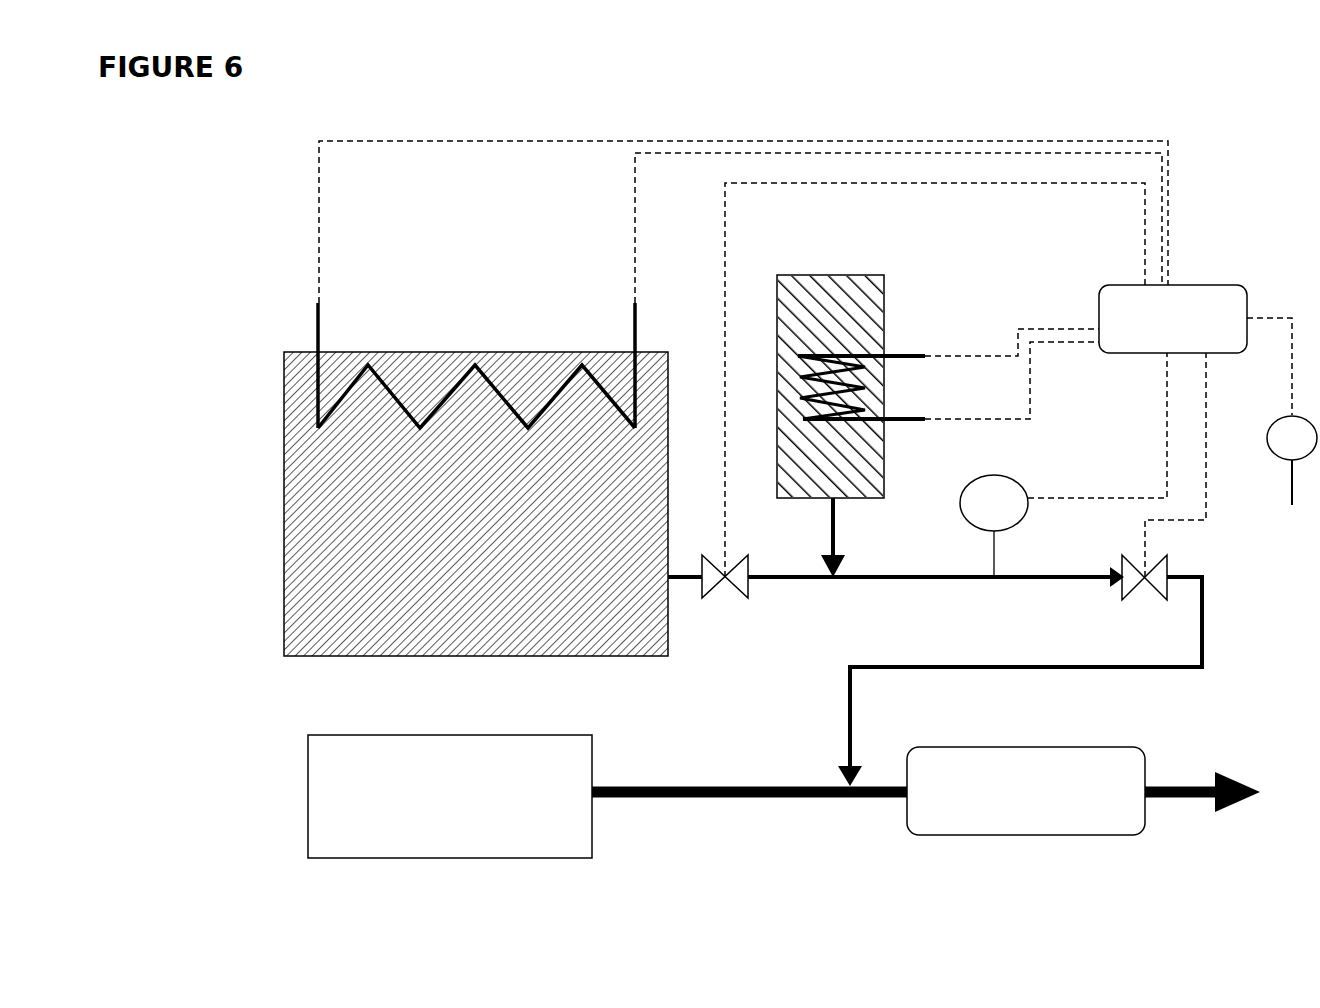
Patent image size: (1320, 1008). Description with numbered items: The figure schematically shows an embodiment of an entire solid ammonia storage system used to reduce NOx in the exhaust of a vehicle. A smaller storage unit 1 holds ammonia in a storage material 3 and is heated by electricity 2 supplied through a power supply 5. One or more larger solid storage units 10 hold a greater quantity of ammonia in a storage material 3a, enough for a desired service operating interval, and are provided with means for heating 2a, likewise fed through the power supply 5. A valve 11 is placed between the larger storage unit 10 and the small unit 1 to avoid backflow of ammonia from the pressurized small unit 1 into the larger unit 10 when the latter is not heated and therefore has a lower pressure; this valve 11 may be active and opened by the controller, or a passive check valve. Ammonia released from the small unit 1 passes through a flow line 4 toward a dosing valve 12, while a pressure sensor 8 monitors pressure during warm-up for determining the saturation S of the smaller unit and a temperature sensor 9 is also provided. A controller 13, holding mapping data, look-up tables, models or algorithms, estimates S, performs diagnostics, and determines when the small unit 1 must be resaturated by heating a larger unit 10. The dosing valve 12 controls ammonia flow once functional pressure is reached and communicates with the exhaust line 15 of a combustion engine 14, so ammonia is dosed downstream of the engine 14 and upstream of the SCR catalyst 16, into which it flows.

The storage unit 1 is at (814, 262).
The electricity 2 is at (908, 410).
The means for heating 2a is at (330, 323).
The storage material 3 is at (830, 386).
The storage material 3a is at (476, 504).
The flow line 4 is at (845, 537).
The power supply 5 is at (885, 290).
The pressure sensor 8 is at (1063, 465).
The temperature sensor 9 is at (1282, 411).
The larger solid storage unit 10 is at (519, 330).
The valve 11 is at (923, 403).
The dosing valve 12 is at (1160, 488).
The controller 13 is at (1173, 319).
The combustion engine 14 is at (450, 796).
The exhaust line 15 is at (749, 776).
The SCR catalyst 16 is at (1083, 791).